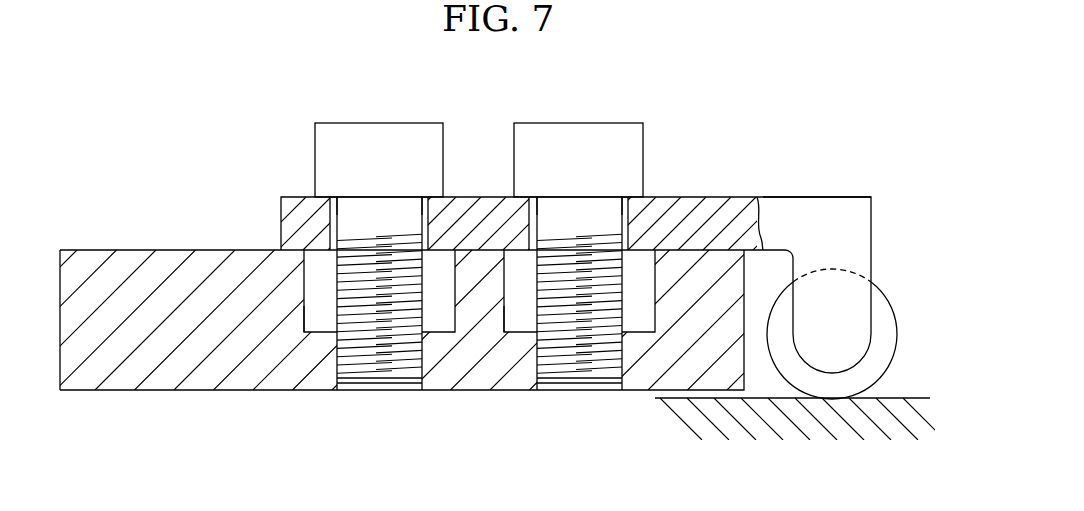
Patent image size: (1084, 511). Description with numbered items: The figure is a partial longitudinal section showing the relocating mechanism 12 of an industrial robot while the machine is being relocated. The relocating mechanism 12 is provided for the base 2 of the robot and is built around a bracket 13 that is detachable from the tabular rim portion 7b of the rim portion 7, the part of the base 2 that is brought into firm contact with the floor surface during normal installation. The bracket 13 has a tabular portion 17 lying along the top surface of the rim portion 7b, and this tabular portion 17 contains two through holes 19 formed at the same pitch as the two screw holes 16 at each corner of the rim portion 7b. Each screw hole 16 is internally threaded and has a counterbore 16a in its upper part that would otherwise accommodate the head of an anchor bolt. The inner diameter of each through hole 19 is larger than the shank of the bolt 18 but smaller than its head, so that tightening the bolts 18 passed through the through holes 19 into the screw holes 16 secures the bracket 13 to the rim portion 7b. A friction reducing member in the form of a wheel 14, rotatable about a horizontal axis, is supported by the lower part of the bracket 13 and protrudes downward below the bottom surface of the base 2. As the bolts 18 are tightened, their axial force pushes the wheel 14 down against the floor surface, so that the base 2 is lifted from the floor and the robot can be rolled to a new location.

The base 2 is at (136, 98).
The rim portion 7 is at (163, 236).
The tabular rim portion 7b is at (115, 250).
The relocating mechanism 12 is at (863, 150).
The bracket 13 is at (797, 181).
The wheel 14 is at (897, 332).
The screw hole 16 is at (338, 348).
The counterbore 16a is at (305, 306).
The tabular portion 17 is at (697, 197).
The bolt 18 is at (378, 123).
The through hole 19 is at (337, 214).